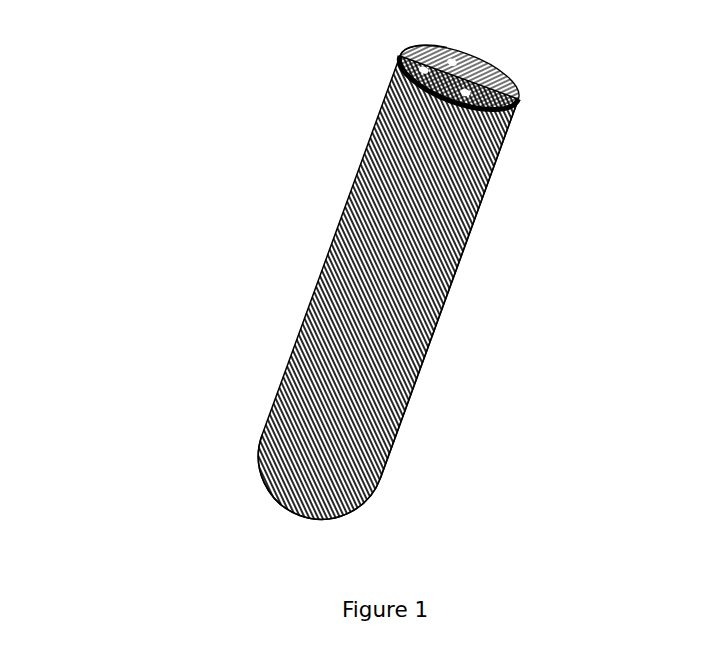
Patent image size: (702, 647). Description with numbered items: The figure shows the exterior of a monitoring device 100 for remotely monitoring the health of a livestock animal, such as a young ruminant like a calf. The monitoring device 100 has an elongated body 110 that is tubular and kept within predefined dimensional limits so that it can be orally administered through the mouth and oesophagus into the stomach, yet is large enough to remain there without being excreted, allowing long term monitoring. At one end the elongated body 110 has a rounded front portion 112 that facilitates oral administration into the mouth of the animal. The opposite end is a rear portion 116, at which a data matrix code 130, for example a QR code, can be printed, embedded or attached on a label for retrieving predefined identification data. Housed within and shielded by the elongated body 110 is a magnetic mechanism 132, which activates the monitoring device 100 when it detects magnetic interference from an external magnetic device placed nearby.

The monitoring device 100 is at (290, 278).
The elongated body 110 is at (380, 296).
The rounded front portion 112 is at (311, 486).
The rear portion 116 is at (423, 51).
The data matrix code 130 is at (459, 78).
The magnetic mechanism 132 is at (450, 288).